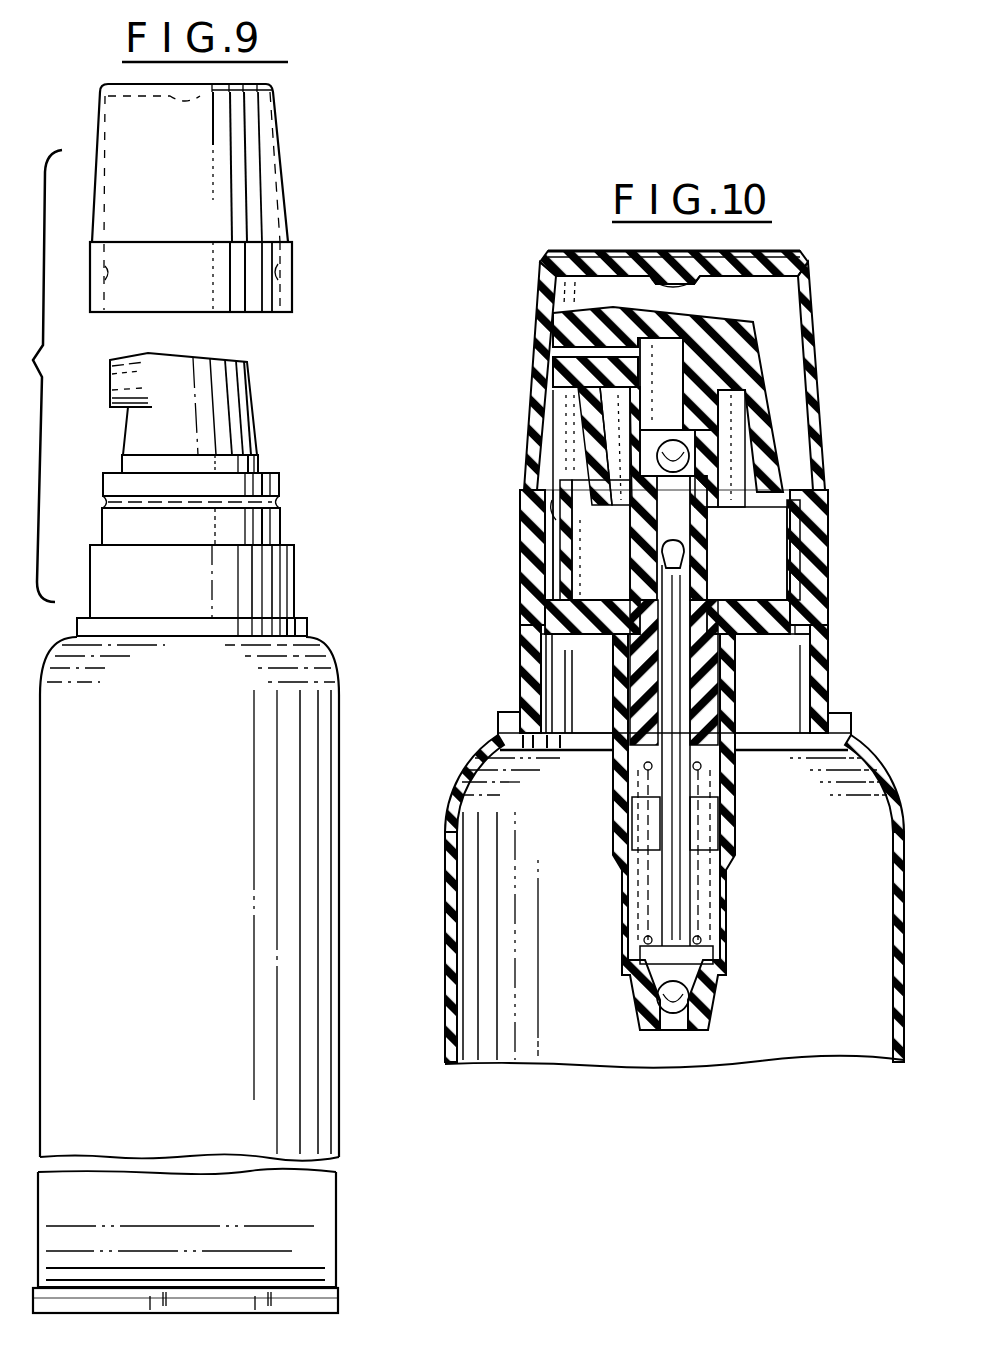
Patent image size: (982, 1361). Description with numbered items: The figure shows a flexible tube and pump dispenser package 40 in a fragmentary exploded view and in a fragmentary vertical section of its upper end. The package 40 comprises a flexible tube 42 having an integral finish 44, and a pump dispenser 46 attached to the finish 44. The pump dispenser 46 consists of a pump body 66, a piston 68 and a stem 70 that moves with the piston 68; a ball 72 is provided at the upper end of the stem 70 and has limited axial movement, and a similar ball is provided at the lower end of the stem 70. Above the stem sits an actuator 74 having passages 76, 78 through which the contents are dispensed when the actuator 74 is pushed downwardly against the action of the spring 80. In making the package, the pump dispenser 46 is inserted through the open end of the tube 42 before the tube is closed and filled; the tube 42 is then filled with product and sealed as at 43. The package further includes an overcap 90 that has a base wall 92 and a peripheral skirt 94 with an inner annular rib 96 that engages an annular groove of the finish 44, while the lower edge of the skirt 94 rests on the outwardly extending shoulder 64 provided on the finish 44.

In FIG. 9, the flexible tube and pump dispenser package 40 is at (289, 353).
In FIG. 9, the flexible tube 42 is at (328, 700).
In FIG. 10, the flexible tube 42 is at (447, 1040).
In FIG. 9, the seal 43 is at (335, 1300).
In FIG. 9, the integral finish 44 is at (270, 445).
In FIG. 10, the integral finish 44 is at (826, 677).
In FIG. 10, the pump dispenser 46 is at (716, 563).
In FIG. 10, the outwardly extending shoulder 64 is at (828, 608).
In FIG. 10, the pump body 66 is at (740, 822).
In FIG. 10, the piston 68 is at (617, 773).
In FIG. 10, the stem 70 is at (645, 533).
In FIG. 10, the ball 72 is at (690, 453).
In FIG. 10, the actuator 74 is at (745, 378).
In FIG. 10, the passage 76 is at (668, 355).
In FIG. 10, the passage 78 is at (575, 357).
In FIG. 10, the spring 80 is at (702, 940).
In FIG. 9, the overcap 90 is at (285, 162).
In FIG. 10, the overcap 90 is at (791, 248).
In FIG. 9, the base wall 92 is at (271, 86).
In FIG. 10, the base wall 92 is at (604, 251).
In FIG. 9, the peripheral skirt 94 is at (287, 220).
In FIG. 10, the peripheral skirt 94 is at (542, 292).
In FIG. 10, the inner annular rib 96 is at (530, 536).